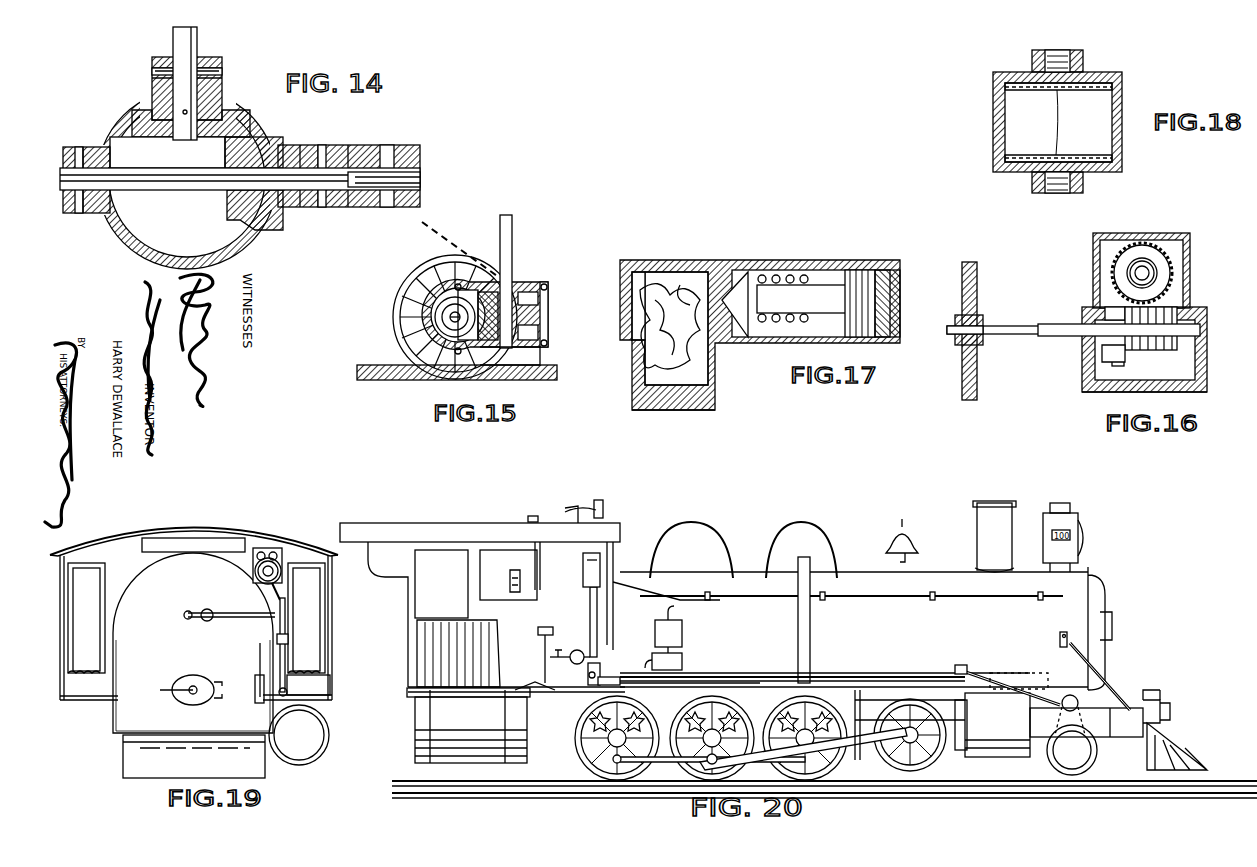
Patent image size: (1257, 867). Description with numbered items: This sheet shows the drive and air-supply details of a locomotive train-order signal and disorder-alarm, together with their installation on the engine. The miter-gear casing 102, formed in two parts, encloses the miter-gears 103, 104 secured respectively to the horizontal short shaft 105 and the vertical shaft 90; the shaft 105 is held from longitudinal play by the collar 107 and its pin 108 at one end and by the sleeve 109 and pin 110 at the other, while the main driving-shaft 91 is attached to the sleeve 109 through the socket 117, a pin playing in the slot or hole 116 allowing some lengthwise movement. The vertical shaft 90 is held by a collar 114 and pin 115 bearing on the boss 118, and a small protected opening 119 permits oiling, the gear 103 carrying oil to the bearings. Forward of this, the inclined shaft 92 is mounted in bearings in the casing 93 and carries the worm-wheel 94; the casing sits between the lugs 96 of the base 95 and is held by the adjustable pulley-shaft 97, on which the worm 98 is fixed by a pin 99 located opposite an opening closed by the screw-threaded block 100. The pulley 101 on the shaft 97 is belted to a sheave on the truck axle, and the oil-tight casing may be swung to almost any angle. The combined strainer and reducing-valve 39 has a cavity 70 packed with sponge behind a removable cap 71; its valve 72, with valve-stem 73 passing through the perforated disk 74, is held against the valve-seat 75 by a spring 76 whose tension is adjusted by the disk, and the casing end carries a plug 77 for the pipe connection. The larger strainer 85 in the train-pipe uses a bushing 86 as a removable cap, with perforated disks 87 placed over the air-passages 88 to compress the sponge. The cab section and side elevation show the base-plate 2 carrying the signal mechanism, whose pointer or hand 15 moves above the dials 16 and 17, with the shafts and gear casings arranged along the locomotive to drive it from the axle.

In FIG. 19, the base-plate 2 is at (253, 557).
In FIG. 19, the pointer or hand 15 is at (262, 584).
In FIG. 19, the dial 16 is at (258, 571).
In FIG. 19, the dial 17 is at (281, 572).
In FIG. 17, the combined strainer and reducing-valve 39 is at (697, 258).
In FIG. 17, the cavity 70 is at (670, 326).
In FIG. 17, the removable cap 71 is at (690, 411).
In FIG. 17, the valve 72 is at (745, 338).
In FIG. 17, the valve-stem 73 is at (800, 288).
In FIG. 17, the perforated disk 74 is at (855, 266).
In FIG. 17, the valve-seat 75 is at (742, 285).
In FIG. 17, the spring 76 is at (775, 322).
In FIG. 17, the plug 77 is at (900, 277).
In FIG. 18, the strainer 85 is at (1124, 94).
In FIG. 20, the strainer 85 is at (575, 650).
In FIG. 18, the bushing 86 is at (1098, 72).
In FIG. 18, the perforated disks 87 is at (1060, 122).
In FIG. 18, the air-passages 88 is at (1055, 201).
In FIG. 14, the vertical shaft 90 is at (197, 37).
In FIG. 19, the vertical shaft 90 is at (278, 625).
In FIG. 20, the vertical shaft 90 is at (591, 620).
In FIG. 14, the shaft 91 is at (163, 190).
In FIG. 20, the shaft 91 is at (752, 676).
In FIG. 15, the inclined shaft 92 is at (514, 248).
In FIG. 16, the inclined shaft 92 is at (1135, 275).
In FIG. 20, the inclined shaft 92 is at (990, 680).
In FIG. 15, the casing 93 is at (535, 282).
In FIG. 16, the casing 93 is at (1190, 255).
In FIG. 15, the worm-wheel 94 is at (549, 308).
In FIG. 16, the worm-wheel 94 is at (1125, 289).
In FIG. 15, the base 95 is at (548, 380).
In FIG. 16, the base 95 is at (1090, 392).
In FIG. 15, the lugs 96 is at (442, 356).
In FIG. 16, the lugs 96 is at (1208, 350).
In FIG. 15, the pulley-shaft 97 is at (452, 318).
In FIG. 16, the pulley-shaft 97 is at (1070, 336).
In FIG. 15, the worm 98 is at (432, 310).
In FIG. 16, the worm 98 is at (1160, 320).
In FIG. 16, the pin 99 is at (1110, 352).
In FIG. 16, the screw-threaded block 100 is at (1118, 368).
In FIG. 15, the pulley 101 is at (413, 281).
In FIG. 16, the pulley 101 is at (962, 392).
In FIG. 20, the pulley 101 is at (1080, 702).
In FIG. 14, the casing 102 is at (125, 112).
In FIG. 19, the casing 102 is at (288, 691).
In FIG. 20, the casing 102 is at (590, 685).
In FIG. 14, the miter-gear 103 is at (232, 208).
In FIG. 14, the miter-gear 104 is at (180, 139).
In FIG. 14, the horizontal short shaft 105 is at (138, 195).
In FIG. 14, the collar 107 is at (90, 213).
In FIG. 14, the pin 108 is at (70, 210).
In FIG. 14, the sleeve 109 is at (342, 207).
In FIG. 20, the sleeve 109 is at (605, 680).
In FIG. 14, the pin 110 is at (322, 145).
In FIG. 14, the collar 114 is at (224, 80).
In FIG. 14, the pin 115 is at (224, 62).
In FIG. 14, the slot or hole 116 is at (392, 145).
In FIG. 14, the socket 117 is at (422, 181).
In FIG. 14, the boss 118 is at (152, 92).
In FIG. 14, the protected opening 119 is at (252, 114).